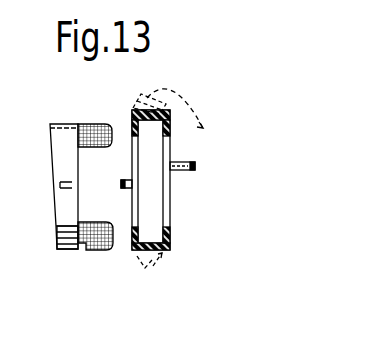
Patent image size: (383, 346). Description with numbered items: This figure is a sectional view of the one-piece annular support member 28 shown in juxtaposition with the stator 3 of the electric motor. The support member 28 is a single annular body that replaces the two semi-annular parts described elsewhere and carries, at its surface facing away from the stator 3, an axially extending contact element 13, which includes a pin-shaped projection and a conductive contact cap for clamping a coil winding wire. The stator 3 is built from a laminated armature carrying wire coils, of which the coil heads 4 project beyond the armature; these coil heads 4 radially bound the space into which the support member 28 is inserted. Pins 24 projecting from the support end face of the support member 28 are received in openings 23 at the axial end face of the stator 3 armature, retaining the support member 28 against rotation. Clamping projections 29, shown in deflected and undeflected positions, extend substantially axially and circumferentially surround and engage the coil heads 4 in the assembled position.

The stator 3 is at (62, 250).
The coil heads 4 is at (95, 249).
The contact element 13 is at (188, 170).
The openings 23 is at (52, 182).
The pins 24 is at (122, 178).
The one-piece annular support member 28 is at (172, 234).
The clamping projections 29 is at (147, 300).